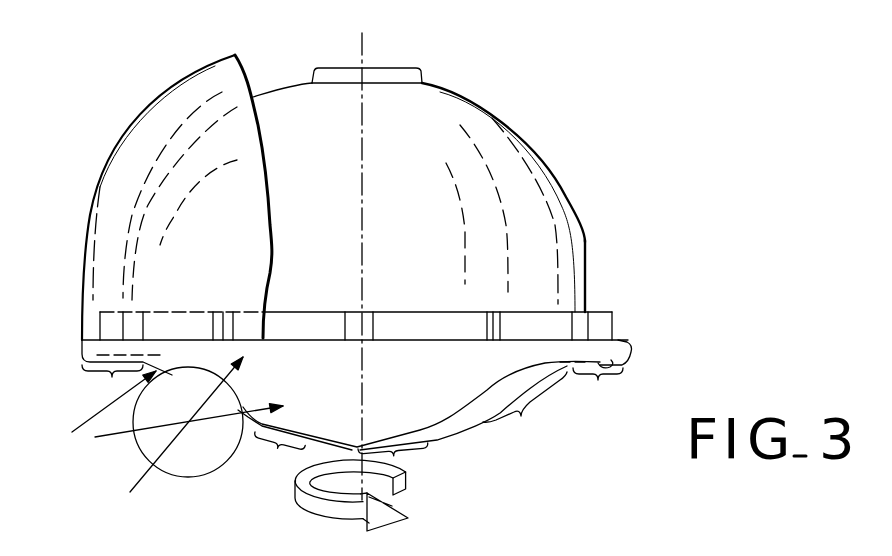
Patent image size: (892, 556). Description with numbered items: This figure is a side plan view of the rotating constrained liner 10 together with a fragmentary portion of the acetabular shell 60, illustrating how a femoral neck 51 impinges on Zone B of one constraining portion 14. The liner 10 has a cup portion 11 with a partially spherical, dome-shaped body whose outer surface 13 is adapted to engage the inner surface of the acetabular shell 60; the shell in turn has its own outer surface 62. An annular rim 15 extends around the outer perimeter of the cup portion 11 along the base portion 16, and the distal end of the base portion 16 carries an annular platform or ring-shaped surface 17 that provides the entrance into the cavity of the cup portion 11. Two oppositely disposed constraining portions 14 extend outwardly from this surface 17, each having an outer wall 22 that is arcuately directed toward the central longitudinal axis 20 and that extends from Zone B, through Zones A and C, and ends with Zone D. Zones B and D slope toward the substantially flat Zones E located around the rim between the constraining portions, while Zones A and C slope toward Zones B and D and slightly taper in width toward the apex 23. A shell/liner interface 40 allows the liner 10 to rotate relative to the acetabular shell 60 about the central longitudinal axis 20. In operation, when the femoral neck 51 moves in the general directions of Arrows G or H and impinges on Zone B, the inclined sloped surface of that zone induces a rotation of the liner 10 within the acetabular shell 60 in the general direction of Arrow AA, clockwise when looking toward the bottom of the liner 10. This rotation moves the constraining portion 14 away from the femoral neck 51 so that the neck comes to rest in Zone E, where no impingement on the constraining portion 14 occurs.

The rotating constrained liner 10 is at (556, 93).
The cup portion 11 is at (553, 200).
The outer surface 13 is at (444, 134).
The constraining portion 14 is at (430, 405).
The annular rim 15 is at (627, 355).
The base portion 16 is at (594, 223).
The annular platform 17 is at (618, 352).
The central longitudinal axis 20 is at (363, 58).
The outer wall 22 is at (432, 382).
The apex 23 is at (300, 468).
The shell/liner interface 40 is at (615, 316).
The femoral neck 51 is at (182, 460).
The acetabular shell 60 is at (203, 88).
The outer surface 62 is at (126, 191).
The Zone A is at (278, 451).
The Arrow AA is at (404, 514).
The Zone B is at (101, 409).
The Zone C is at (394, 460).
The Zone D is at (525, 405).
The Zone E is at (352, 387).
The Arrow G is at (196, 418).
The Arrow H is at (197, 414).